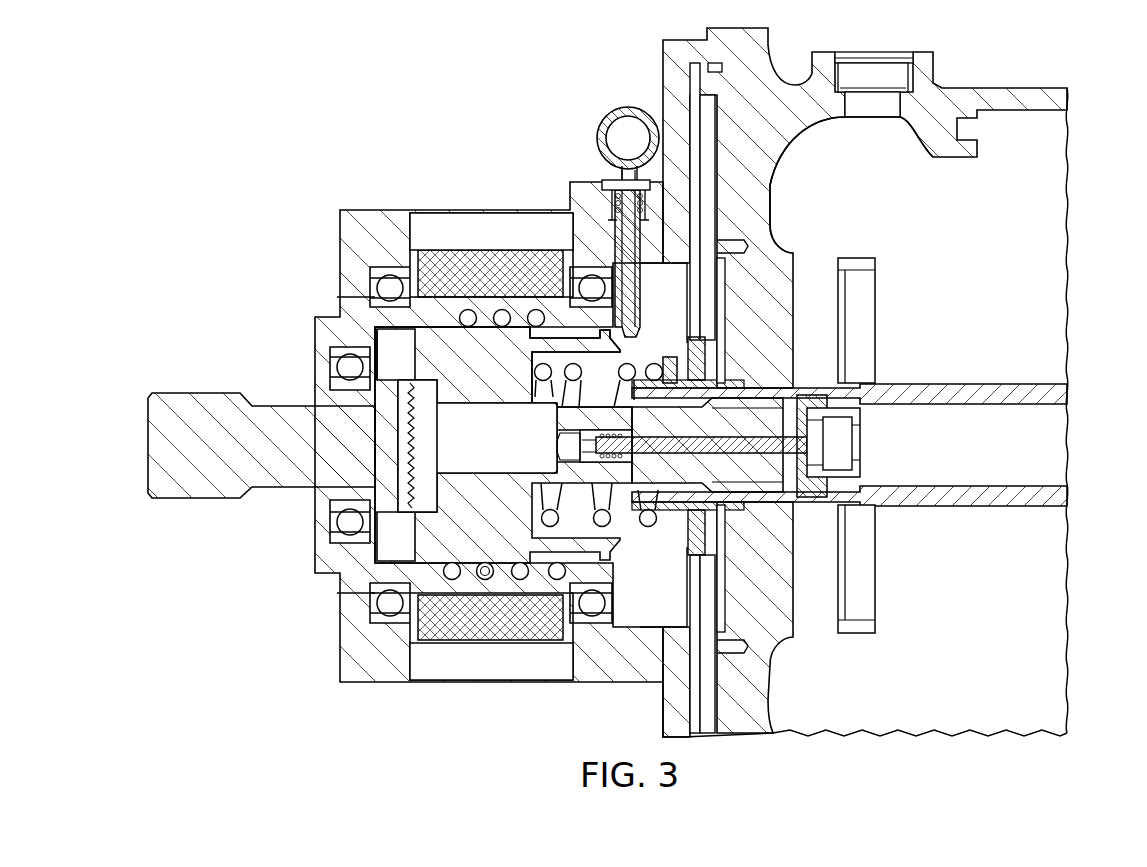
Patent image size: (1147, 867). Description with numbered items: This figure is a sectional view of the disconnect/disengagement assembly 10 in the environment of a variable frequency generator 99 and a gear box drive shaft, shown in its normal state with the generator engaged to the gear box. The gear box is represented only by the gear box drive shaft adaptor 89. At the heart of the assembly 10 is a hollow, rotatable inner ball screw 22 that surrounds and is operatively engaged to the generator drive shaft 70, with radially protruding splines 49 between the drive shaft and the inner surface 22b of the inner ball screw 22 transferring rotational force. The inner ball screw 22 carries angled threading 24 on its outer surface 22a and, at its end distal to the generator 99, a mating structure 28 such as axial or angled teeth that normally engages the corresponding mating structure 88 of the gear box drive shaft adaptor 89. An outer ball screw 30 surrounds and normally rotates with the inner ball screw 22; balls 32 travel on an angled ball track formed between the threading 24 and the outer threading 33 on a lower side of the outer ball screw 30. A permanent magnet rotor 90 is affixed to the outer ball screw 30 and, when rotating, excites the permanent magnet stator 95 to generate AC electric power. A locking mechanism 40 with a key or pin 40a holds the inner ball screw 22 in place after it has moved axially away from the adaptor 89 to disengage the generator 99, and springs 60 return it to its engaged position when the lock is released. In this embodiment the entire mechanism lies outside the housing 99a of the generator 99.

The disconnect/disengagement assembly 10 is at (198, 156).
The inner ball screw 22 is at (488, 350).
The outer surface of inner ball screw 22a is at (423, 327).
The inner surface of inner ball screw 22b is at (500, 407).
The angled threading 24 is at (469, 328).
The mating structure (axial teeth) 28 is at (412, 500).
The outer ball screw 30 is at (390, 317).
The balls 32 is at (486, 562).
The outer threading 33 is at (470, 309).
The locking mechanism 40 is at (632, 298).
The key or pin 40a is at (630, 112).
The splines 49 is at (540, 420).
The springs 60 is at (580, 372).
The generator drive shaft 70 is at (781, 410).
The mating structure (dog teeth) of gear box drive shaft adaptor 88 is at (410, 455).
The gear box drive shaft adaptor 89 is at (273, 417).
The permanent magnet rotor 90 is at (432, 272).
The permanent magnet stator 95 is at (545, 222).
The variable frequency generator 99 is at (1010, 245).
The housing of generator 99a is at (795, 127).